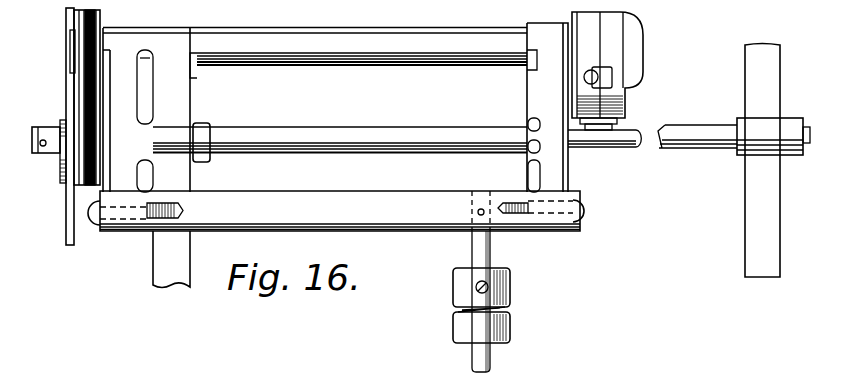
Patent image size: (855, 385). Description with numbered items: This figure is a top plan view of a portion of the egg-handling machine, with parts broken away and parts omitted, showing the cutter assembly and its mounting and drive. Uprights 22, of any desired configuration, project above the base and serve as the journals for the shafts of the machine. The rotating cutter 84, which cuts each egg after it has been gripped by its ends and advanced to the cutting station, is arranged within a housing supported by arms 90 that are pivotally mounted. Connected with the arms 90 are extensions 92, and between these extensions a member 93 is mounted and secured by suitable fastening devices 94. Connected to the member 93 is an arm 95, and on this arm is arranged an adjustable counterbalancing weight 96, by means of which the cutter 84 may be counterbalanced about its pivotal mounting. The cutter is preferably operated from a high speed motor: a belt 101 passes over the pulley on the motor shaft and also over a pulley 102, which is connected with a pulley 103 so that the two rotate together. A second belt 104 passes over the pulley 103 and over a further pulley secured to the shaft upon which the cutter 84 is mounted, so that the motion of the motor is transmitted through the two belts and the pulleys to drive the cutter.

The uprights 22 is at (172, 287).
The rotating cutter 84 is at (632, 86).
The arms 90 is at (114, 30).
The extensions 92 is at (125, 178).
The member 93 is at (372, 232).
The fastening devices 94 is at (93, 230).
The arm 95 is at (495, 255).
The adjustable counterbalancing weight 96 is at (510, 327).
The belt 101 is at (66, 202).
The pulley 102 is at (62, 108).
The pulley 103 is at (93, 108).
The belt 104 is at (78, 90).